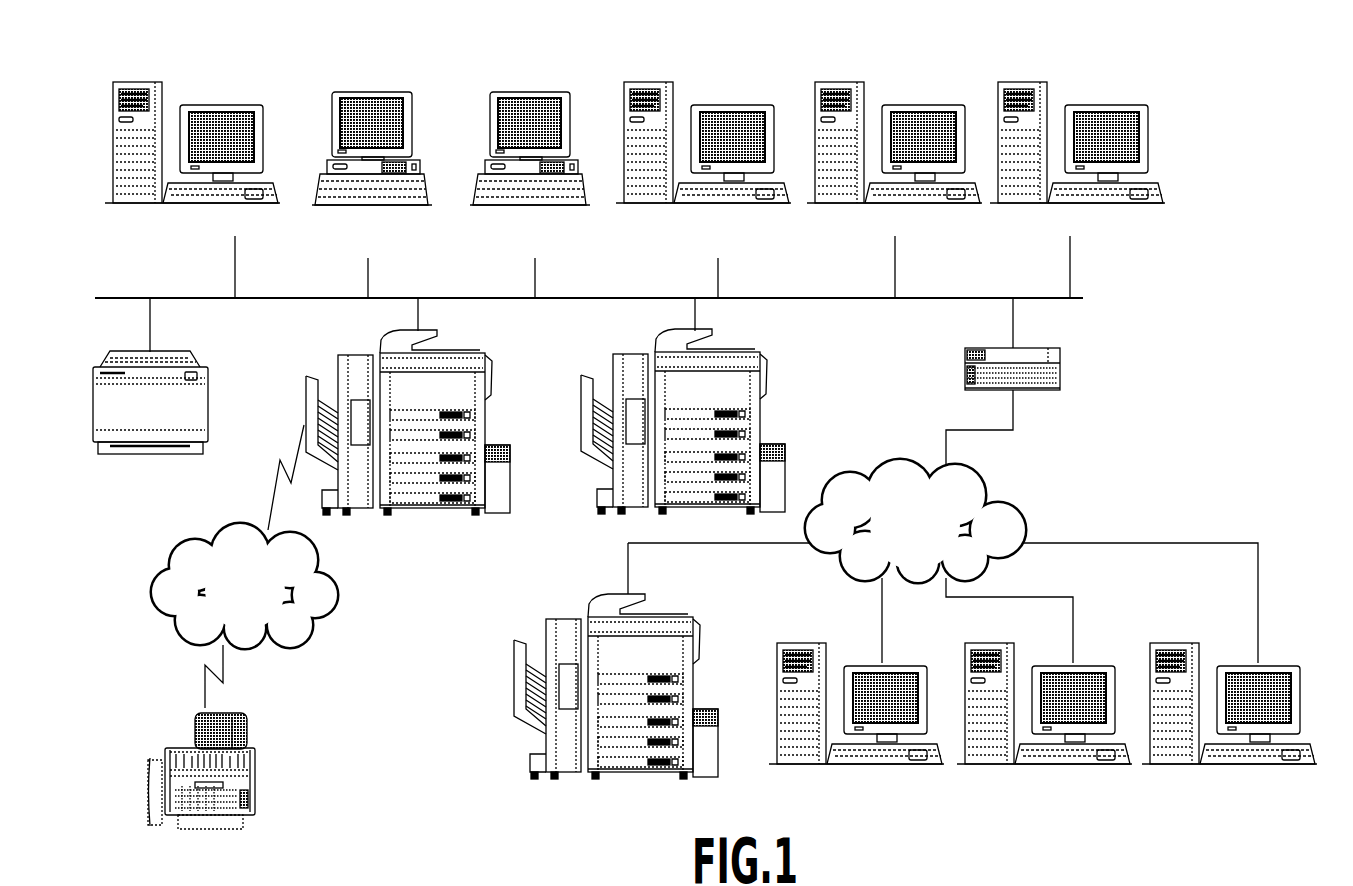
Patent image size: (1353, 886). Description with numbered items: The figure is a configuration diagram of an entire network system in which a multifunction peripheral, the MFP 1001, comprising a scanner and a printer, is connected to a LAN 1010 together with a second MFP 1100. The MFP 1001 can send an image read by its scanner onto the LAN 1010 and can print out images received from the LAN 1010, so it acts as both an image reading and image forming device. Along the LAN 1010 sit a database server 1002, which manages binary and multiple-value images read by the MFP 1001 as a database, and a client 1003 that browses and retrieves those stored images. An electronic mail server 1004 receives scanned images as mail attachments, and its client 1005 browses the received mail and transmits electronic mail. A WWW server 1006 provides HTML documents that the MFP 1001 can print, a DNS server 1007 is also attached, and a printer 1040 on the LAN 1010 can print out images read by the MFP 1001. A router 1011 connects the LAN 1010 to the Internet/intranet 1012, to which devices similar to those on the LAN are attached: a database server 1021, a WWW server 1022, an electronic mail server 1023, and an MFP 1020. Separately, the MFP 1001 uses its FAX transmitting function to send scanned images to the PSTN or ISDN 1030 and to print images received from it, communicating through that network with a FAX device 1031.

The MFP 1001 is at (525, 393).
The database server 1002 is at (220, 104).
The client 1003 is at (372, 92).
The electronic mail server 1004 is at (731, 104).
The client 1005 is at (531, 92).
The WWW server 1006 is at (921, 104).
The DNS server 1007 is at (1106, 104).
The LAN 1010 is at (1083, 298).
The router 1011 is at (1062, 368).
The Internet/intranet 1012 is at (1062, 493).
The MFP 1020 is at (701, 637).
The database server 1021 is at (886, 660).
The WWW server 1022 is at (1076, 660).
The electronic mail server 1023 is at (1263, 660).
The PSTN or ISDN 1030 is at (152, 592).
The FAX device 1031 is at (258, 785).
The printer 1040 is at (209, 397).
The MFP 1100 is at (800, 393).